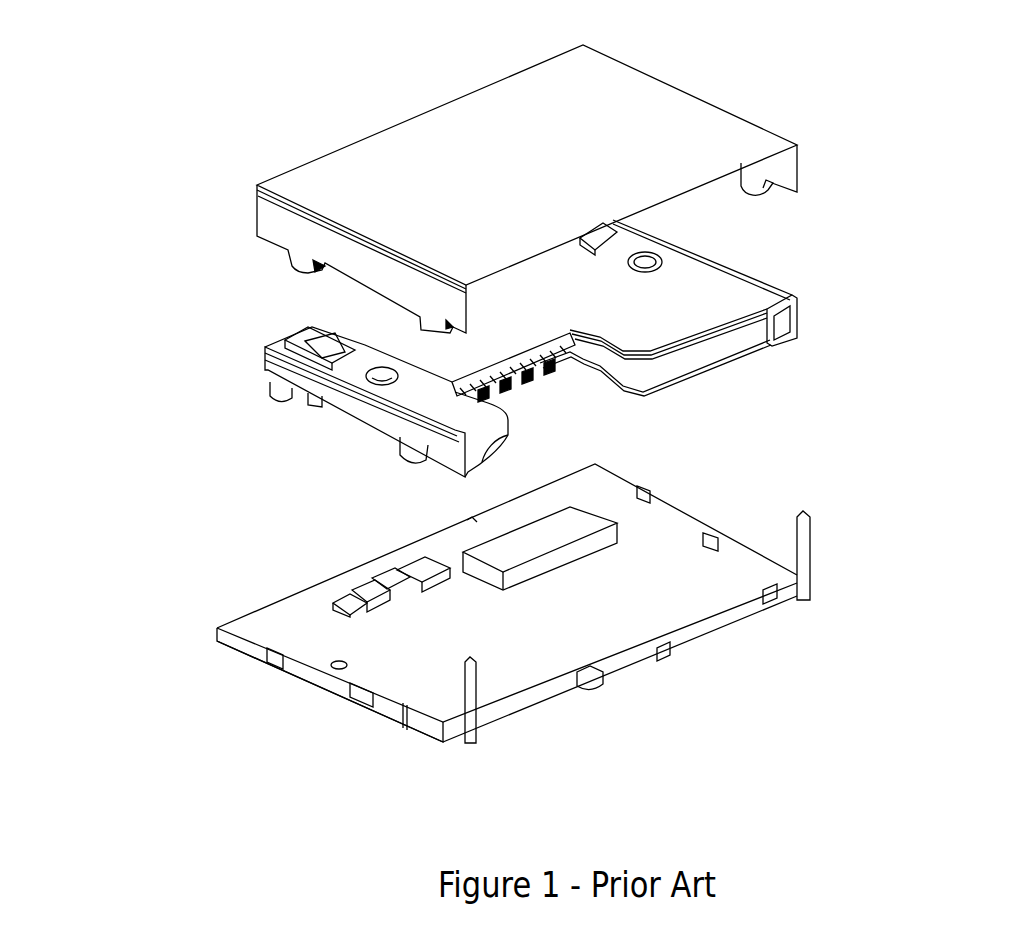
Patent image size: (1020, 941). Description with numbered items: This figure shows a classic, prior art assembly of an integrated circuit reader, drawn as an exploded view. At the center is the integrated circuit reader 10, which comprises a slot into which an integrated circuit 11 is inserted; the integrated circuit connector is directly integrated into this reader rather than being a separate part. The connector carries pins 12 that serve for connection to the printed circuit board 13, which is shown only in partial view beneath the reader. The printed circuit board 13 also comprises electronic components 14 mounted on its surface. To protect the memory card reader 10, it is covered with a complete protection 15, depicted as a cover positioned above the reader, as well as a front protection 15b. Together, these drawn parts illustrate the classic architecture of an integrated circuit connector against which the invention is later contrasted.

The complete protection 15 is at (257, 222).
The integrated circuit reader 10 is at (260, 377).
The integrated circuit 11 is at (710, 347).
The pins 12 is at (567, 377).
The printed circuit board 13 is at (627, 613).
The electronic components 14 is at (357, 580).
The front protection 15b is at (570, 557).